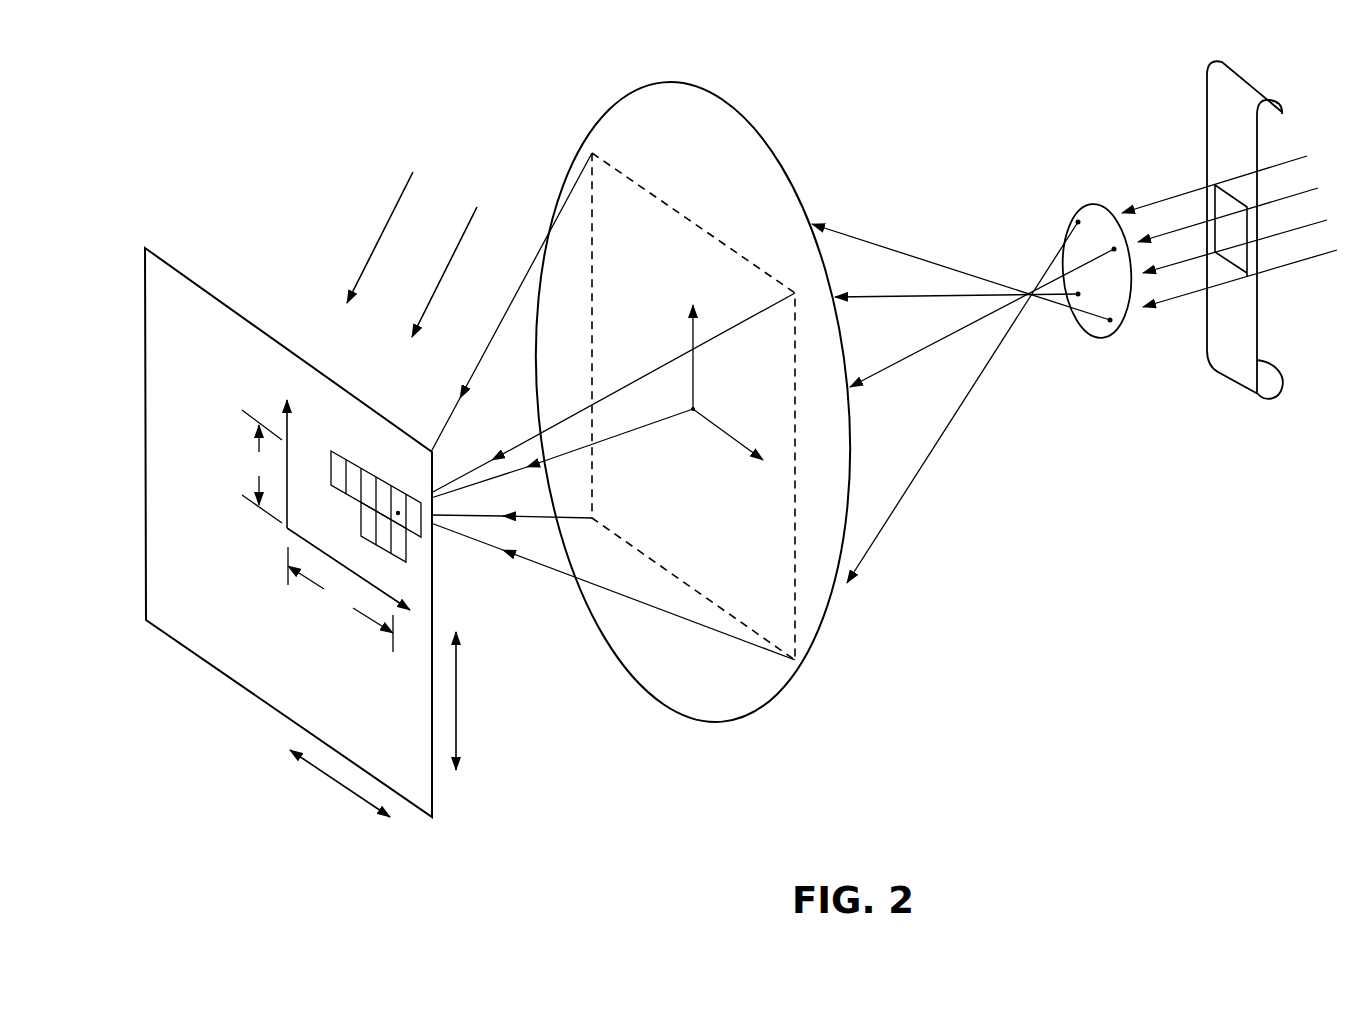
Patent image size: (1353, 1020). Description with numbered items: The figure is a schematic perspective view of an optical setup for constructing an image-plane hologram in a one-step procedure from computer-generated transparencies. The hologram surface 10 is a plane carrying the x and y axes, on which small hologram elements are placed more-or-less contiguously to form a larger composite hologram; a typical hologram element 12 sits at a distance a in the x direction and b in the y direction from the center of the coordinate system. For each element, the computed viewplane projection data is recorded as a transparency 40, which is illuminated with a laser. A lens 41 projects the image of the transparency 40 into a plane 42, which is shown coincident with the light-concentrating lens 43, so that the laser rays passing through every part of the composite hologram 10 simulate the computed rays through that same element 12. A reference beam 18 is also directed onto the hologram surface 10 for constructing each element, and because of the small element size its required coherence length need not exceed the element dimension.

The hologram surface 10 is at (171, 292).
The hologram element 12 is at (397, 494).
The reference beam 18 is at (440, 278).
The transparency 40 is at (1237, 255).
The lens 41 is at (1092, 327).
The plane 42 is at (772, 613).
The light-concentrating lens 43 is at (700, 85).